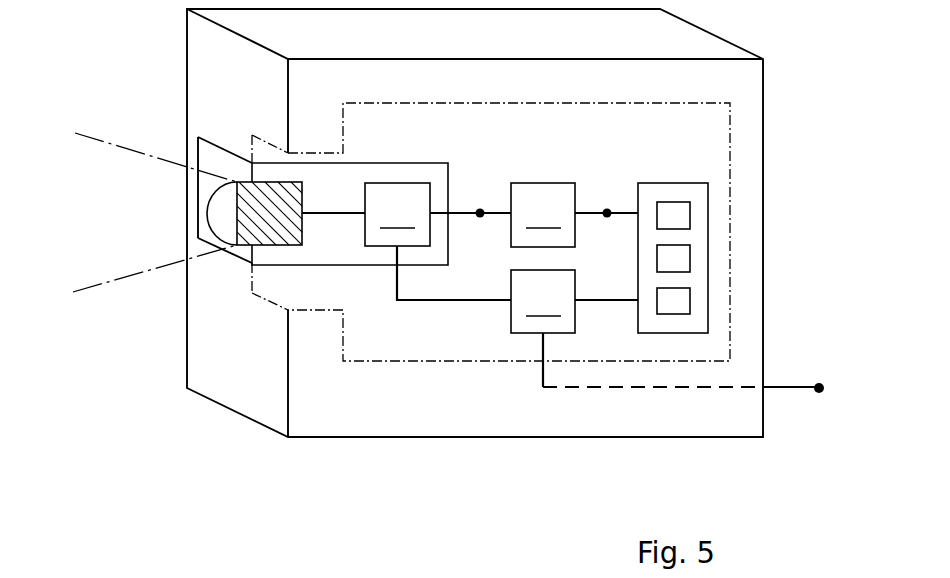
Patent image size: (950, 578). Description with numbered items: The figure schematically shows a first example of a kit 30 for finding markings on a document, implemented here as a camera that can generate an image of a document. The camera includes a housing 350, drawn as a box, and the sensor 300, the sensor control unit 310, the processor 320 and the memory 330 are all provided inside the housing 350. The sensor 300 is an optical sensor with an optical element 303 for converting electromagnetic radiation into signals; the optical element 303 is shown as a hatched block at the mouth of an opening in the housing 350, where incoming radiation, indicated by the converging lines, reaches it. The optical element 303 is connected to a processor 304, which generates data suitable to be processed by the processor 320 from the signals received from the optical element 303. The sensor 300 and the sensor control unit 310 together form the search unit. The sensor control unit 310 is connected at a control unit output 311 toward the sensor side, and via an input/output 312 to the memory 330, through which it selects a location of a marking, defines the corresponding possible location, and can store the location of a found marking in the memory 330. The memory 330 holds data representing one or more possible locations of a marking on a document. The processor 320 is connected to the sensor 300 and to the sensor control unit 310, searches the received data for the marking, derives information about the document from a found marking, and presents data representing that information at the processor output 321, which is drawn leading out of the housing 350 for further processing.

The kit 30 is at (166, 443).
The sensor 300 is at (277, 228).
The optical element 303 is at (225, 213).
The processor 304 is at (350, 214).
The sensor control unit 310 is at (543, 215).
The control unit output 311 is at (479, 209).
The control unit input 312 is at (606, 209).
The processor 320 is at (543, 301).
The processor output 321 is at (817, 394).
The memory 330 is at (708, 270).
The housing 350 is at (478, 438).